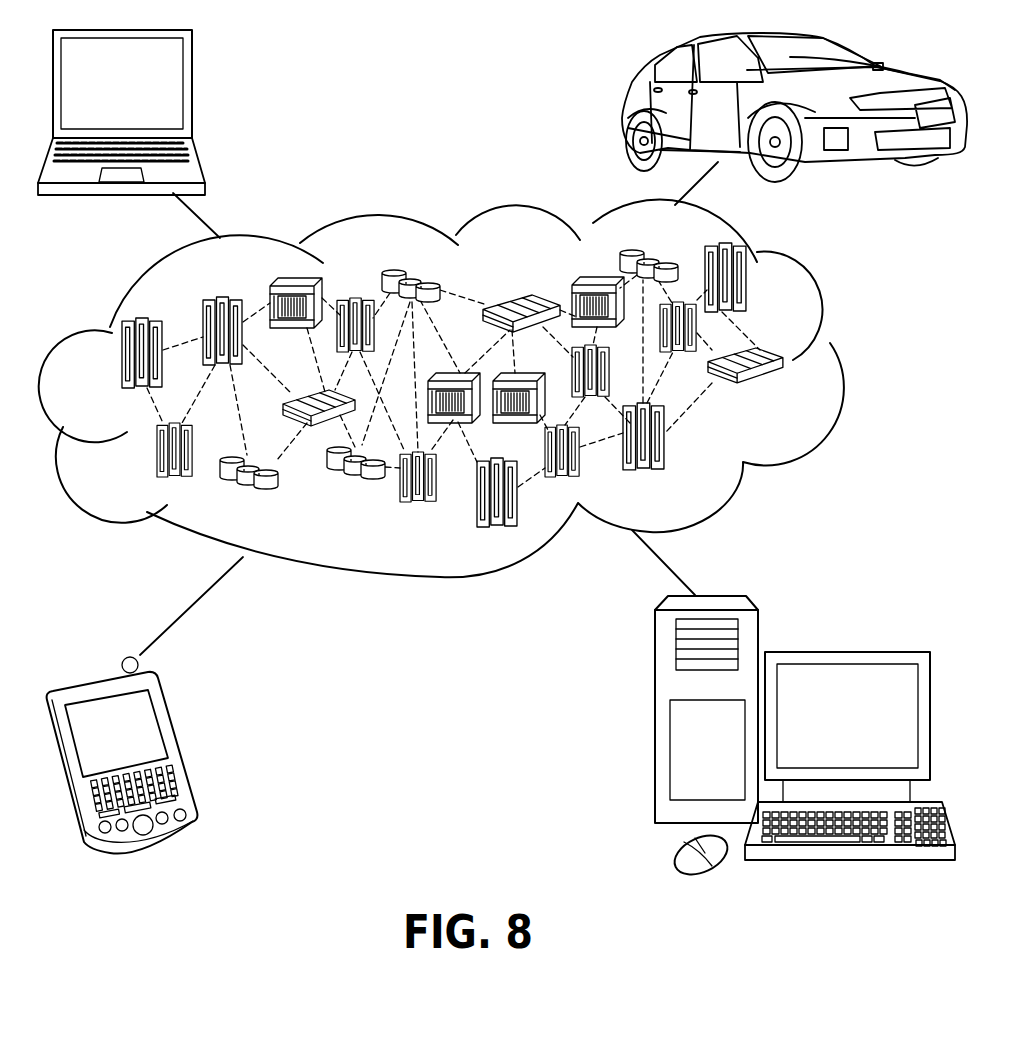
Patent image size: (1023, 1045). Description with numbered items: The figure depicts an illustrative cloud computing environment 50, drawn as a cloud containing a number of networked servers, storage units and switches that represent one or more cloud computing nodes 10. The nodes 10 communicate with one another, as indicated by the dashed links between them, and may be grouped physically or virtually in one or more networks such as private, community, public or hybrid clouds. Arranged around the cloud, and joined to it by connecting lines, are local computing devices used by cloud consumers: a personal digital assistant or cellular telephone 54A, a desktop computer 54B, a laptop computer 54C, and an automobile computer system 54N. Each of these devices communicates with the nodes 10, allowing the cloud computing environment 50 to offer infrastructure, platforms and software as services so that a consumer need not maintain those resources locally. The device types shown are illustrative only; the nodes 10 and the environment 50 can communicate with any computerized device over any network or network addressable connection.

The cloud computing nodes 10 is at (792, 396).
The cloud computing environment 50 is at (845, 363).
The personal digital assistant (PDA) or cellular telephone 54A is at (187, 748).
The desktop computer 54B is at (845, 650).
The laptop computer 54C is at (192, 92).
The automobile computer system 54N is at (623, 107).